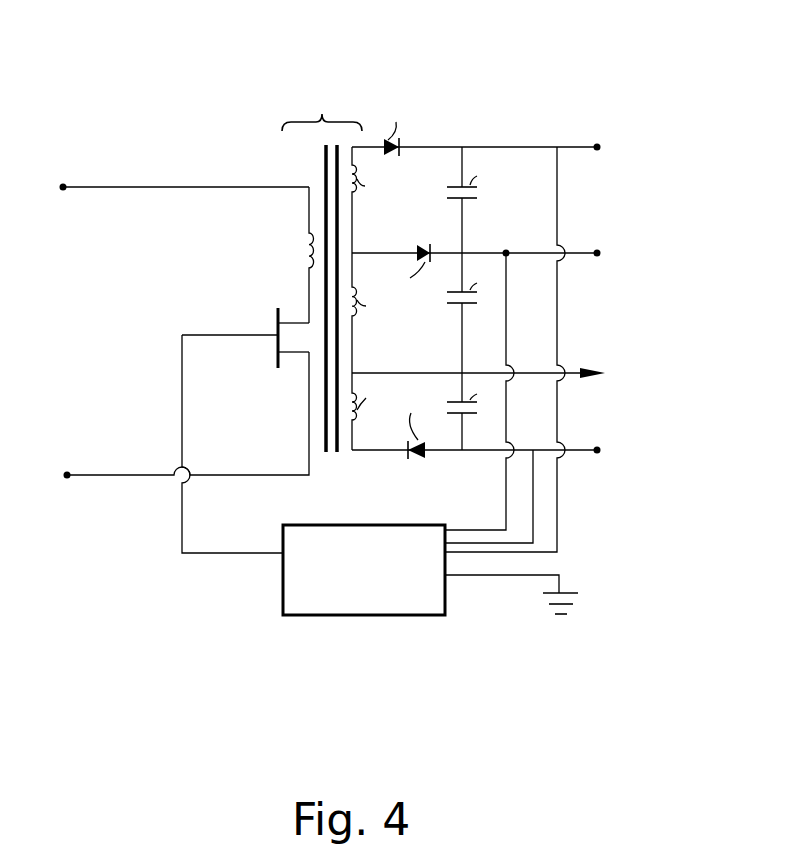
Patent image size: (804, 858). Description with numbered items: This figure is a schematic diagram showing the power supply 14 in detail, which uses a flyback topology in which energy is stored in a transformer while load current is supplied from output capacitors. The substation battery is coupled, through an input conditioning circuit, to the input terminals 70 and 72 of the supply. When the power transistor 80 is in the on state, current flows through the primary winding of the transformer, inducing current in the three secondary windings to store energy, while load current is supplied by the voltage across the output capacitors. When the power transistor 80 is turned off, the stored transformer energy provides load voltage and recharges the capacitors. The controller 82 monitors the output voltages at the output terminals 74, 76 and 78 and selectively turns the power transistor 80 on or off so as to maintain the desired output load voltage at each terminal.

The power supply 14 is at (218, 108).
The input terminal 70 is at (63, 187).
The input terminal 72 is at (67, 475).
The output terminal 74 is at (597, 146).
The output terminal 76 is at (597, 252).
The output terminal 78 is at (597, 449).
The power transistor 80 is at (278, 362).
The controller 82 is at (283, 603).